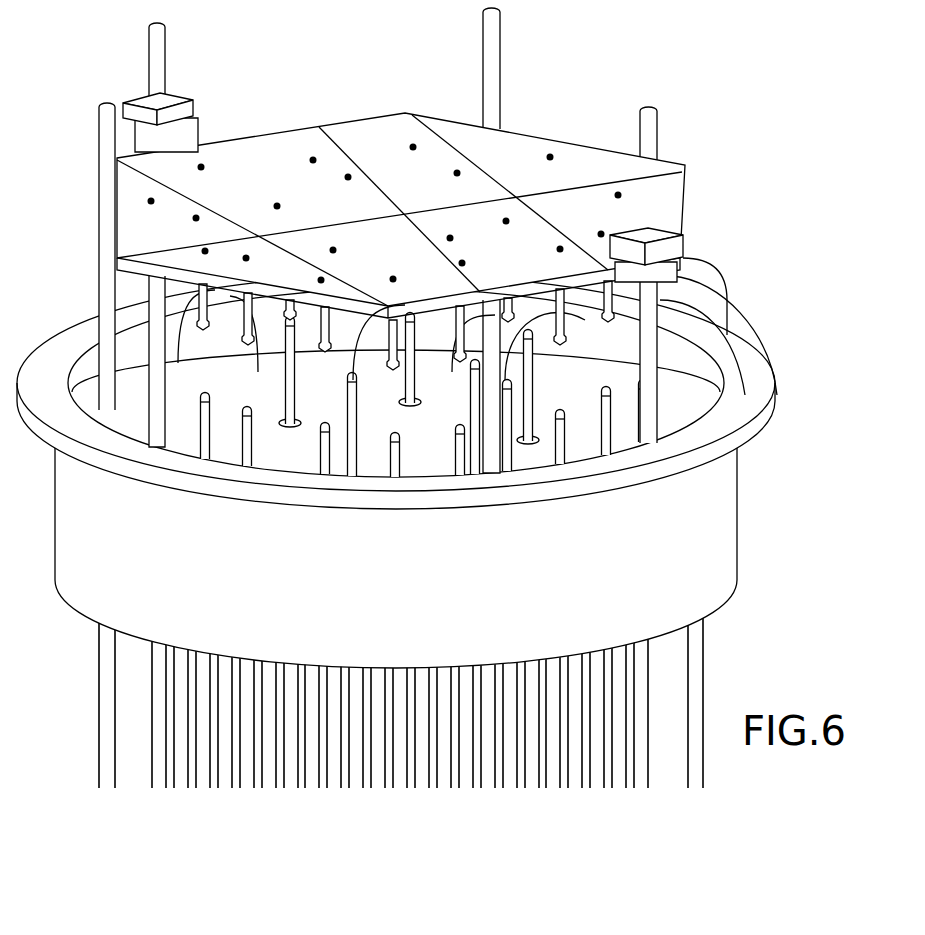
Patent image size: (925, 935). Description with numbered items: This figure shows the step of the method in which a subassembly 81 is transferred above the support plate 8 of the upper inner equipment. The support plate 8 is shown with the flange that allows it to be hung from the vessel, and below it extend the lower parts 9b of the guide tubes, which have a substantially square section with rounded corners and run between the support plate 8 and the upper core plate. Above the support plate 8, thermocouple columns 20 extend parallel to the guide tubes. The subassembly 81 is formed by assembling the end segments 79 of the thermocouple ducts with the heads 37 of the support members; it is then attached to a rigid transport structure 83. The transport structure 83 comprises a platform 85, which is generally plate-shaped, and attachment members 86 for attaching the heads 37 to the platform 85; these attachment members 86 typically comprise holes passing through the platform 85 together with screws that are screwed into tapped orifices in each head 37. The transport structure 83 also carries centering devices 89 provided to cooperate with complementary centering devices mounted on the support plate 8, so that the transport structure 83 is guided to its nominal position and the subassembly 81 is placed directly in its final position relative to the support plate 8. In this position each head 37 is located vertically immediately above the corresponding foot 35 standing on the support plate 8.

The support plate 8 is at (722, 525).
The lower part of guide tube 9b is at (222, 780).
The thermocouple column 20 is at (155, 42).
The foot 35 is at (270, 392).
The head 37 is at (566, 333).
The end segment 79 is at (183, 352).
The subassembly 81 is at (748, 300).
The transport structure 83 is at (385, 114).
The platform 85 is at (352, 125).
The attachment member 86 is at (194, 220).
The centering device 89 is at (175, 98).